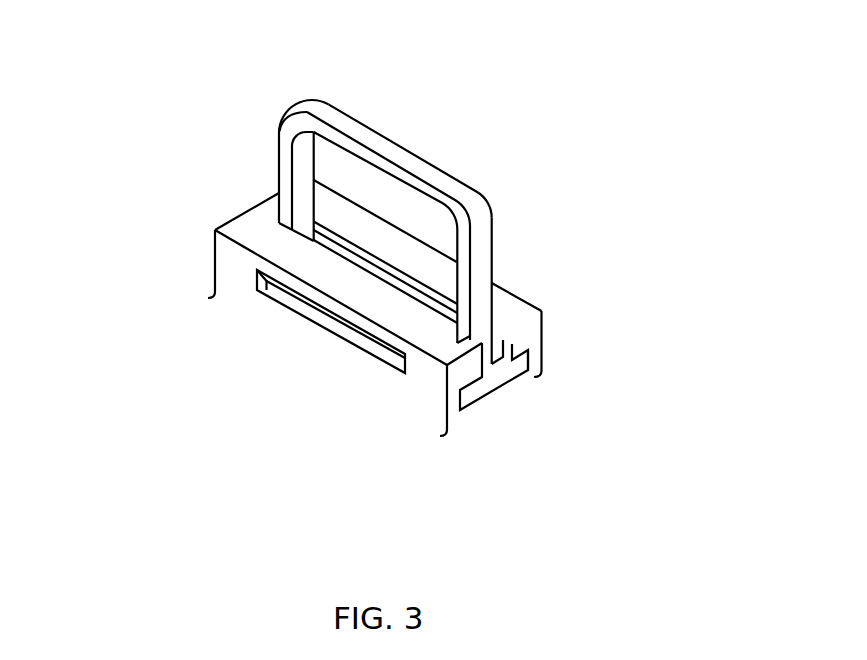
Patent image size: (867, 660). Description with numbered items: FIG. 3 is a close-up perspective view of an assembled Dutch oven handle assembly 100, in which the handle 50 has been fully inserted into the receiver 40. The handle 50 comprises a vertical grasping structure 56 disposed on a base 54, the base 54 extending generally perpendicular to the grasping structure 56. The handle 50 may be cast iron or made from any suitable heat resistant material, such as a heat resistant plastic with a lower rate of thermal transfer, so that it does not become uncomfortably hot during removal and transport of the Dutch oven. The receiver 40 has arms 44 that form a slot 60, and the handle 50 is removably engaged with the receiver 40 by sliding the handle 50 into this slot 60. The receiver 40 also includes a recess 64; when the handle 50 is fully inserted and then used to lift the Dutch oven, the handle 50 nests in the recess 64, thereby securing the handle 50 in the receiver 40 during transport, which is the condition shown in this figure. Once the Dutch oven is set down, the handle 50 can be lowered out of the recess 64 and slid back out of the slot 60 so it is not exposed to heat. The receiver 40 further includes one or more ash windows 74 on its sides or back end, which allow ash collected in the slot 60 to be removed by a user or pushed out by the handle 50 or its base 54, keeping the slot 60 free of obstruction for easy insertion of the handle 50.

The Dutch oven handle assembly 100 is at (686, 134).
The receiver 40 is at (384, 358).
The arms 44 is at (523, 342).
The handle 50 is at (473, 159).
The base 54 is at (392, 283).
The vertical grasping structure 56 is at (356, 131).
The slot 60 is at (501, 342).
The recess 64 is at (495, 339).
The ash windows 74 is at (296, 310).